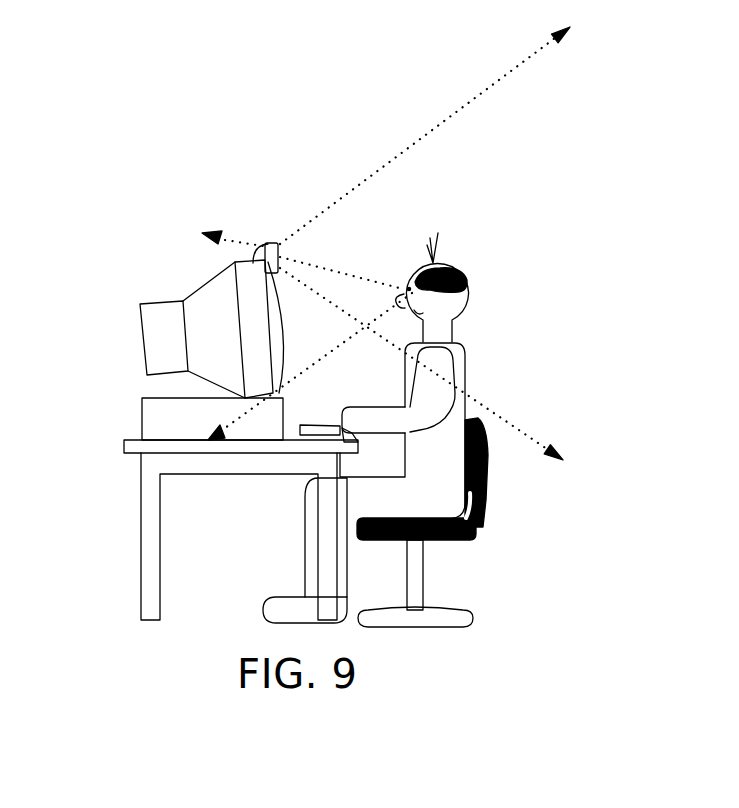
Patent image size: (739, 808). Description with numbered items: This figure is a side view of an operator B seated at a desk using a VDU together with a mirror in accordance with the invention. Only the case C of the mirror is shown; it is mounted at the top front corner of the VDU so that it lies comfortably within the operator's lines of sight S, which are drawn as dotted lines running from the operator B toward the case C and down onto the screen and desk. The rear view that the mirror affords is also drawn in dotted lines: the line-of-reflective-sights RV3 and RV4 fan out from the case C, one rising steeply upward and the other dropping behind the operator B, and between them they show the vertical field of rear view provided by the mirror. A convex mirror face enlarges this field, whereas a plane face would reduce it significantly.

The element VDU is at (152, 347).
The case C is at (272, 243).
The operator B is at (466, 365).
The lines of sight S is at (214, 225).
The line-of-reflective-sight RV3 is at (550, 46).
The line-of-reflective-sight RV4 is at (549, 446).